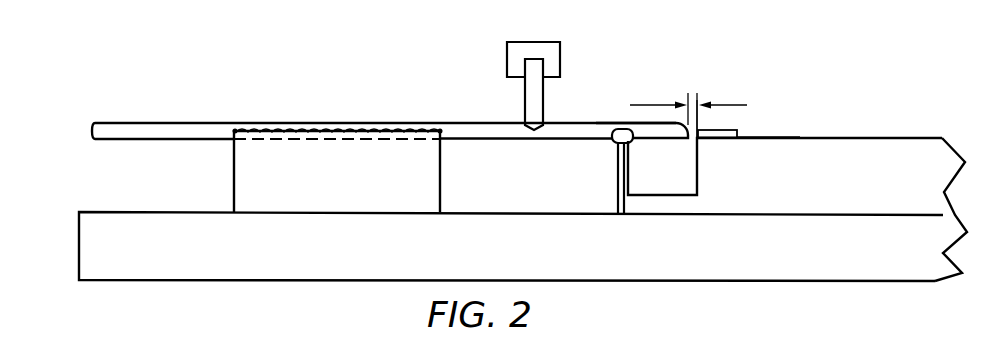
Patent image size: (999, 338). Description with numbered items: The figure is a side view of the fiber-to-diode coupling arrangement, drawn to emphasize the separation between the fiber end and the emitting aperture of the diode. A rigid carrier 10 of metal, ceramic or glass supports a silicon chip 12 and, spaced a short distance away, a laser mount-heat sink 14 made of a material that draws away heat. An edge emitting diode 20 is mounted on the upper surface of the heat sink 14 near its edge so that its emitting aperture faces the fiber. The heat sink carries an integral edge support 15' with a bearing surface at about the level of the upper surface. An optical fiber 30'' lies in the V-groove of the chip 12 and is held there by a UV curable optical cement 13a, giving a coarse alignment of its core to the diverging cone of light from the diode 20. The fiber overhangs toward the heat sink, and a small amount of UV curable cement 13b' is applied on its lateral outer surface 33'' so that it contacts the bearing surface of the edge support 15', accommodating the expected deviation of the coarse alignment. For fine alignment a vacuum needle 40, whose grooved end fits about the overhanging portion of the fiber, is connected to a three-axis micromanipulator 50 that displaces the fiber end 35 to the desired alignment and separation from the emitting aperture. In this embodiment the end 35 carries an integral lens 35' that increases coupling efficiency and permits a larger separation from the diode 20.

The carrier 10 is at (529, 255).
The silicon chip 12 is at (346, 189).
The UV curable optical cement 13a is at (306, 130).
The UV curable cement 13b' is at (390, 149).
The laser mount-heat sink 14 is at (820, 196).
The edge support 15' is at (650, 171).
The edge emitting diode 20 is at (747, 137).
The optical fiber 30'' is at (639, 80).
The outer surface of optical fiber 33'' is at (686, 98).
The end of optical fiber 35 is at (760, 109).
The integral lens 35' is at (738, 98).
The vacuum needle 40 is at (544, 96).
The three-axis micromanipulator 50 is at (560, 55).